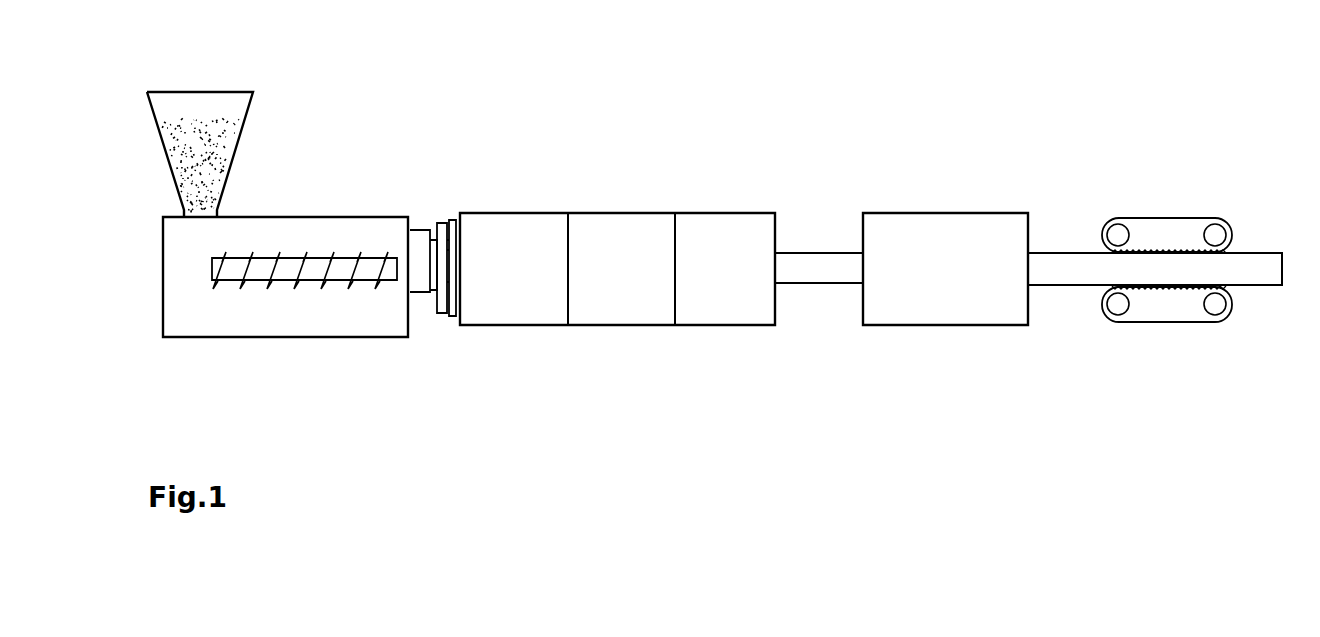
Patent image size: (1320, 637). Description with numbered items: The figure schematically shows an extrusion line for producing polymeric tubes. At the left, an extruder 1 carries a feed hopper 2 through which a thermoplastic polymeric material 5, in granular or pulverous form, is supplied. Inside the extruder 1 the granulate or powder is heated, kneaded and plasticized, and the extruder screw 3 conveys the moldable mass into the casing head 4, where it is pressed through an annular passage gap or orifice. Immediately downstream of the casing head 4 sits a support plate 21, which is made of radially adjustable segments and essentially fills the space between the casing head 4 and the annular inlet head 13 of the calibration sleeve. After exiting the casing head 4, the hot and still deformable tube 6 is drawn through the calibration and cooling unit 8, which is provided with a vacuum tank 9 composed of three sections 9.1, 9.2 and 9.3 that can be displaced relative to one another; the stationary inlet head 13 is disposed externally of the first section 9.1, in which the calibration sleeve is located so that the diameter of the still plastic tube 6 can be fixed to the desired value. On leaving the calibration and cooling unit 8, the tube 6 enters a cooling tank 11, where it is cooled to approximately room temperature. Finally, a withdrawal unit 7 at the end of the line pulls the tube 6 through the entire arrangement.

The extruder 1 is at (349, 134).
The feed hopper 2 is at (222, 92).
The extruder screw 3 is at (260, 272).
The casing head 4 is at (423, 296).
The thermoplastic polymeric material 5 is at (162, 153).
The tube 6 is at (810, 252).
The withdrawal unit 7 is at (1148, 218).
The calibration and cooling unit 8 is at (650, 119).
The vacuum tank 9 is at (723, 213).
The first section 9.1 is at (517, 328).
The second section 9.2 is at (623, 328).
The third section 9.3 is at (722, 328).
The cooling tank 11 is at (931, 210).
The inlet head 13 is at (453, 232).
The support plate 21 is at (443, 312).